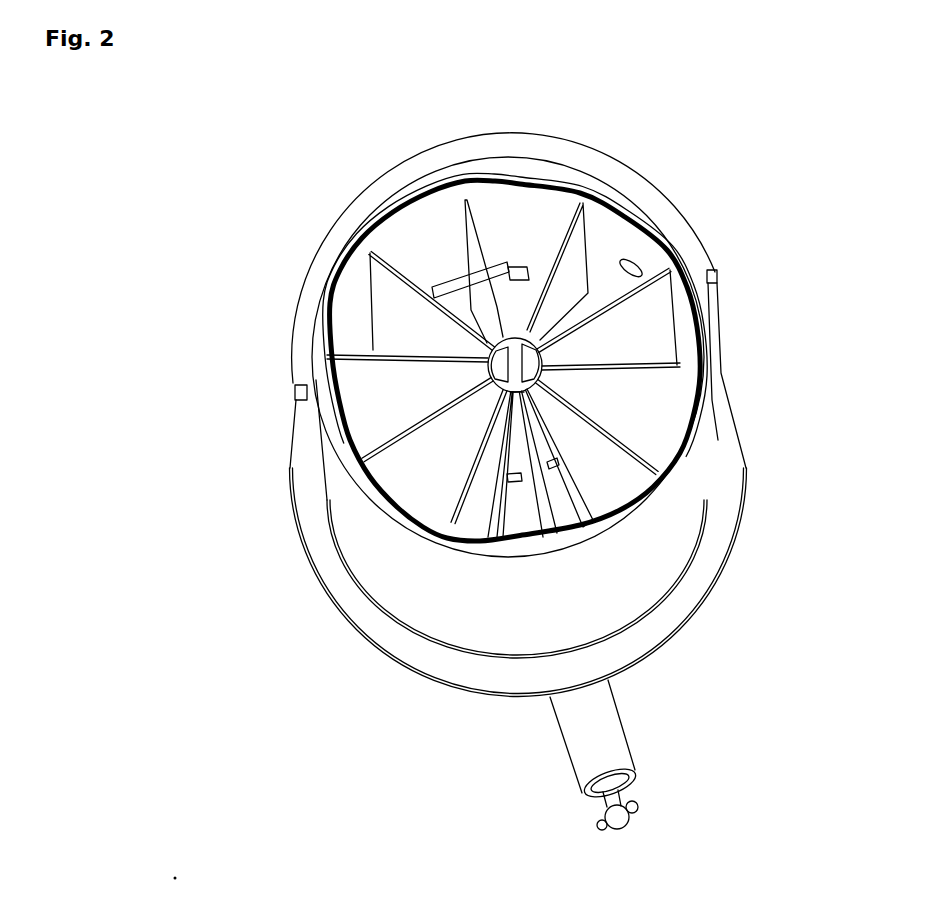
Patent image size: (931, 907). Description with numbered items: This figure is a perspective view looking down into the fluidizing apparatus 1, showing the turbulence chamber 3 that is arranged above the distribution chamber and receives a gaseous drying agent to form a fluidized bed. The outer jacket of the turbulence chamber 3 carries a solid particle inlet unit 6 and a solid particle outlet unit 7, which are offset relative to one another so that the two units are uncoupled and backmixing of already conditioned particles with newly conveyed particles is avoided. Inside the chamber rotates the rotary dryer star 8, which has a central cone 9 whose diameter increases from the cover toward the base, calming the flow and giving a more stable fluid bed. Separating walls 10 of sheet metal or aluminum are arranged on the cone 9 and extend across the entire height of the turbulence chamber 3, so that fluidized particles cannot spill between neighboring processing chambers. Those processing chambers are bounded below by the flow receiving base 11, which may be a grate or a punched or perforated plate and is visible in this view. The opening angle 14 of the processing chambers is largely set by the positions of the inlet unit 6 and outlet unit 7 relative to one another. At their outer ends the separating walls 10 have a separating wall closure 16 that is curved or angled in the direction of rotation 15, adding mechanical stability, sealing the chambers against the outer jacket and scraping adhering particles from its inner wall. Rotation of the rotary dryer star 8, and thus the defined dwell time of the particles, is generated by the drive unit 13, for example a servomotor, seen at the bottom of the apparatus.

The fluidizing apparatus 1 is at (92, 110).
The turbulence chamber 3 is at (663, 508).
The solid particle inlet unit 6 is at (634, 262).
The solid particle outlet unit 7 is at (446, 280).
The rotary dryer star 8 is at (548, 377).
The cone 9 is at (518, 383).
The separating walls 10 is at (400, 290).
The flow receiving base 11 is at (518, 305).
The drive unit 13 is at (636, 792).
The opening angle 14 is at (640, 297).
The direction of rotation 15 is at (725, 293).
The separating wall closure 16 is at (614, 190).